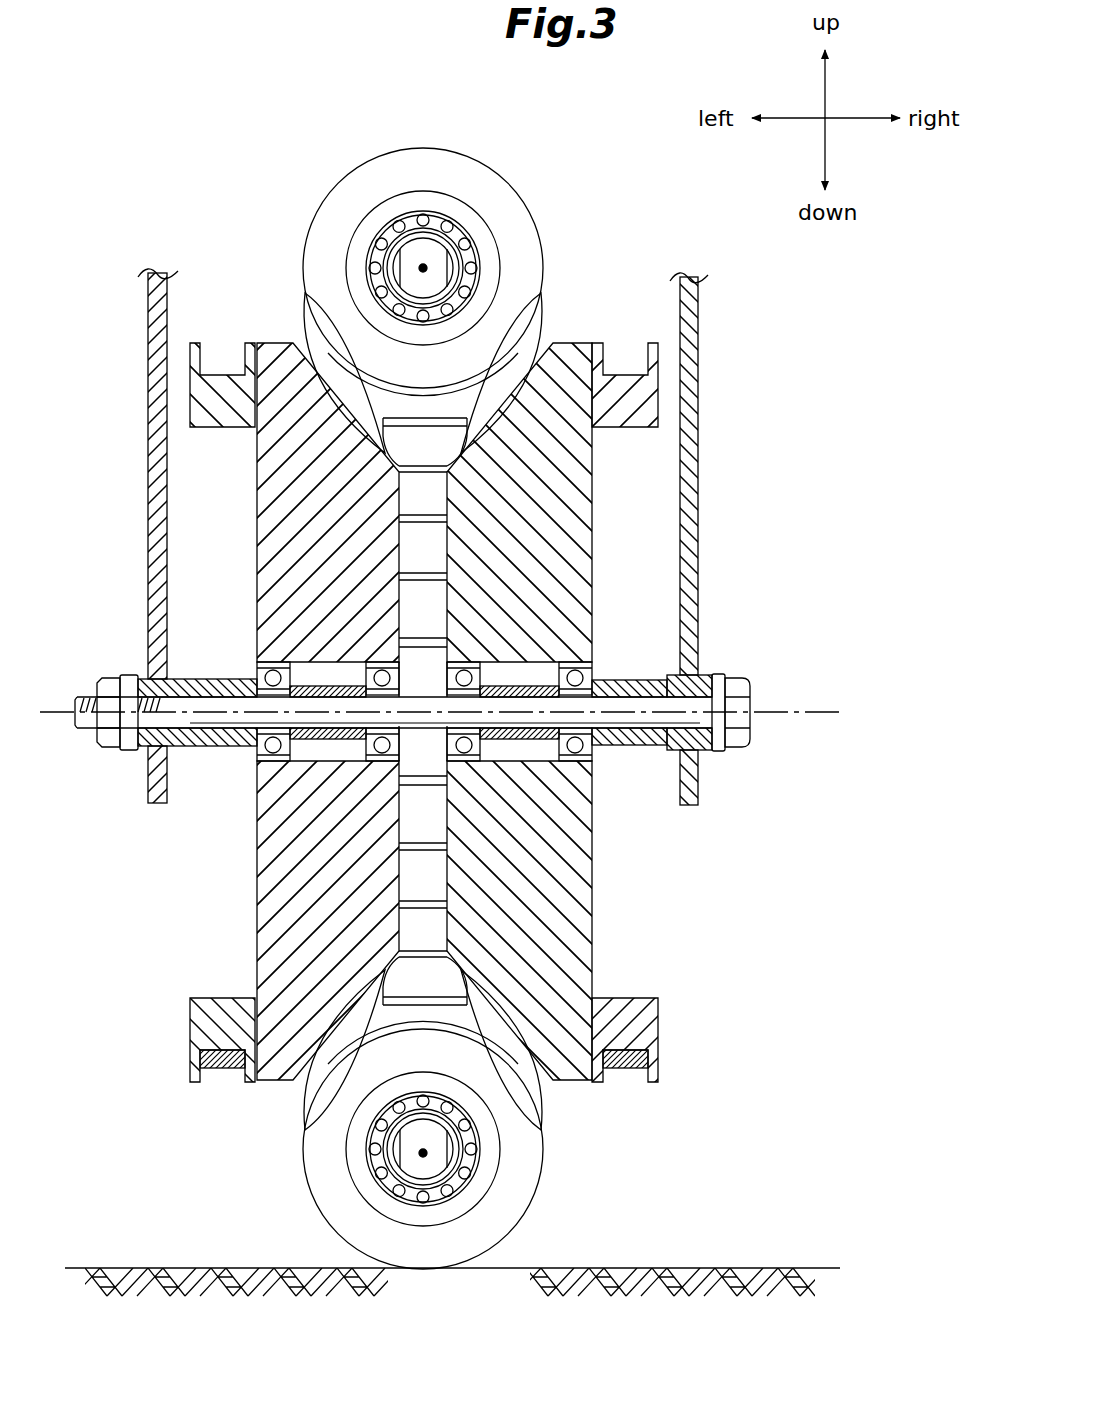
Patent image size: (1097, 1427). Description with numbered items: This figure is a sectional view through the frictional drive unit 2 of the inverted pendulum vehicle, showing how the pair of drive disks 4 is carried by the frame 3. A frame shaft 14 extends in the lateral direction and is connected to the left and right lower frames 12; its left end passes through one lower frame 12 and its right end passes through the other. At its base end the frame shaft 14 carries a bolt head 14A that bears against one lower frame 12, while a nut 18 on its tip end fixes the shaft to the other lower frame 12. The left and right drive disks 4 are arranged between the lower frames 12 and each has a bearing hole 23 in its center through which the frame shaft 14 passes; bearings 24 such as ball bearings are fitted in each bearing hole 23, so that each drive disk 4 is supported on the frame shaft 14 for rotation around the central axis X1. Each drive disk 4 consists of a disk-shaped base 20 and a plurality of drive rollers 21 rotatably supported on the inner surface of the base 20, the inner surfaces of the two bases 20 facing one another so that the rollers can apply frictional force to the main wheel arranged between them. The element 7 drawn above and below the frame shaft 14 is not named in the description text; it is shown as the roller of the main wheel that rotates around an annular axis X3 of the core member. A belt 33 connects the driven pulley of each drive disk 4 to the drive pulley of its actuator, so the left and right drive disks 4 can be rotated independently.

The frictional drive unit 2 is at (273, 132).
The frame 3 is at (702, 378).
The drive disks 4 is at (255, 532).
The roller 7 is at (359, 164).
The lower frames 12 is at (148, 380).
The frame shaft 14 is at (636, 702).
The bolt head 14A is at (740, 690).
The nut 18 is at (108, 752).
The base 20 is at (262, 968).
The drive rollers 21 is at (345, 390).
The bearing hole 23 is at (300, 665).
The bearings 24 is at (290, 762).
The belt 33 is at (222, 1066).
The axis X1 is at (467, 714).
The axis X3 is at (424, 264).